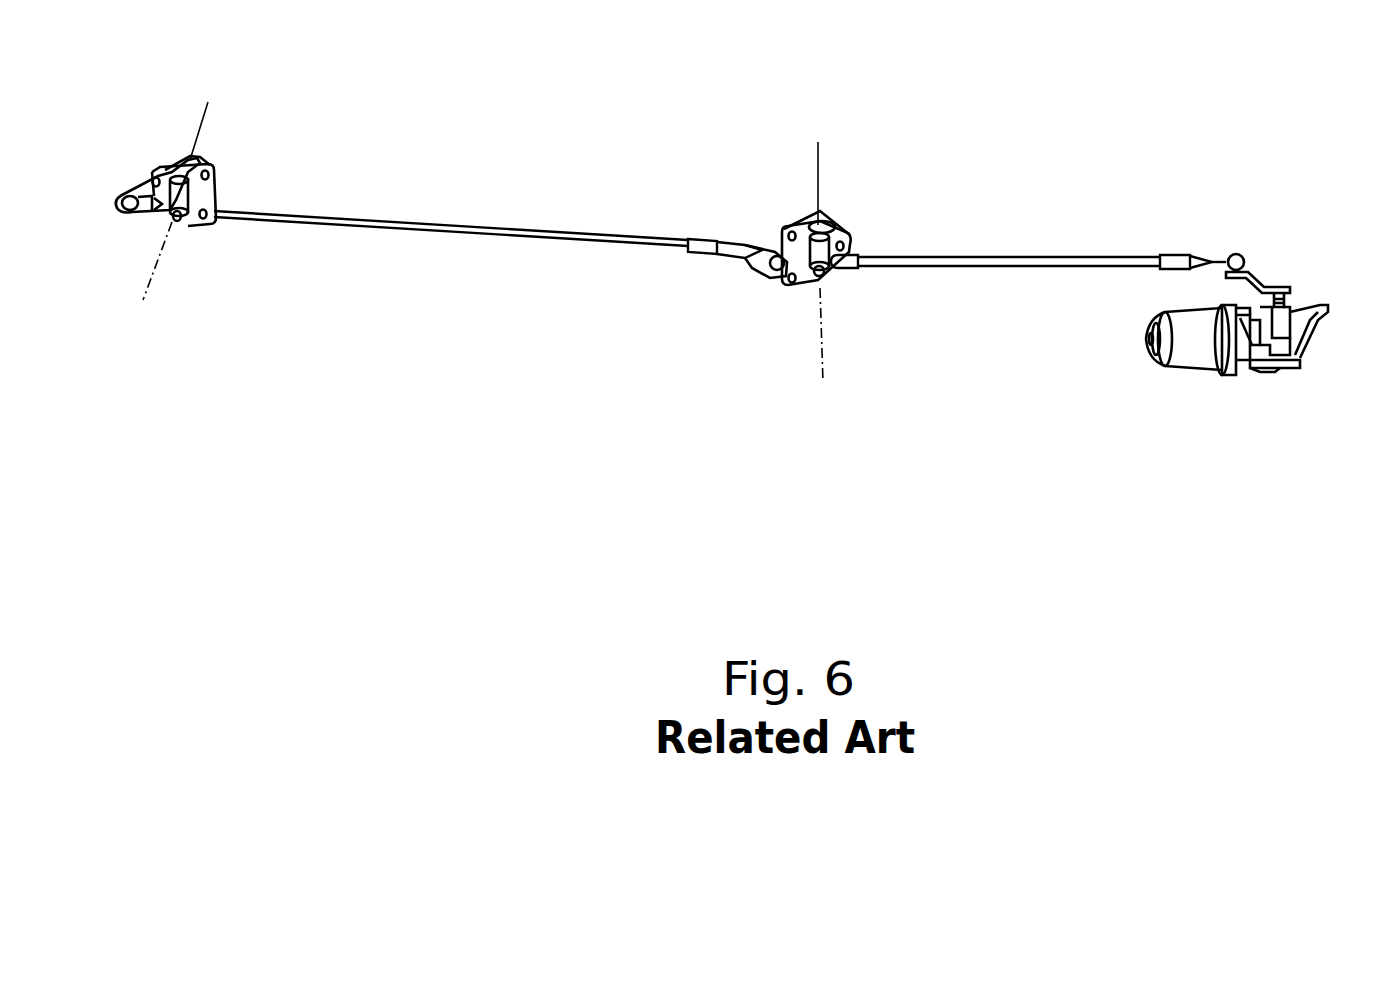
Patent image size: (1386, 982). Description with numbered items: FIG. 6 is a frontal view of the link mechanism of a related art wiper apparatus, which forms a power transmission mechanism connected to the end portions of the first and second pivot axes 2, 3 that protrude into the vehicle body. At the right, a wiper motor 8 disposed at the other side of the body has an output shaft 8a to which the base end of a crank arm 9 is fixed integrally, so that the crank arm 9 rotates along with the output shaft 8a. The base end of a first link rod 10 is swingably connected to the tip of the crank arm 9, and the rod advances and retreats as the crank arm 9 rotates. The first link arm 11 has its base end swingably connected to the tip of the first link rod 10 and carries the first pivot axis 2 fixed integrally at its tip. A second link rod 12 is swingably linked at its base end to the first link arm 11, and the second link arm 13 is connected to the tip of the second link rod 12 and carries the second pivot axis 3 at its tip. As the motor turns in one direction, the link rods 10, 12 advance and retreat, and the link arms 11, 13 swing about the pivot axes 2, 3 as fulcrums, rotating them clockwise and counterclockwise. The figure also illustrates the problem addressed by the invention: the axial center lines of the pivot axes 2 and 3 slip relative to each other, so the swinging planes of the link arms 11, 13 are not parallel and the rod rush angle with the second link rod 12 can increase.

The first pivot axis 2 is at (830, 226).
The second pivot axis 3 is at (192, 192).
The wiper motor 8 is at (1208, 356).
The output shaft 8a is at (1285, 300).
The crank arm 9 is at (1268, 282).
The first link rod 10 is at (1018, 258).
The first link arm 11 is at (778, 240).
The second link rod 12 is at (513, 240).
The second link arm 13 is at (143, 182).